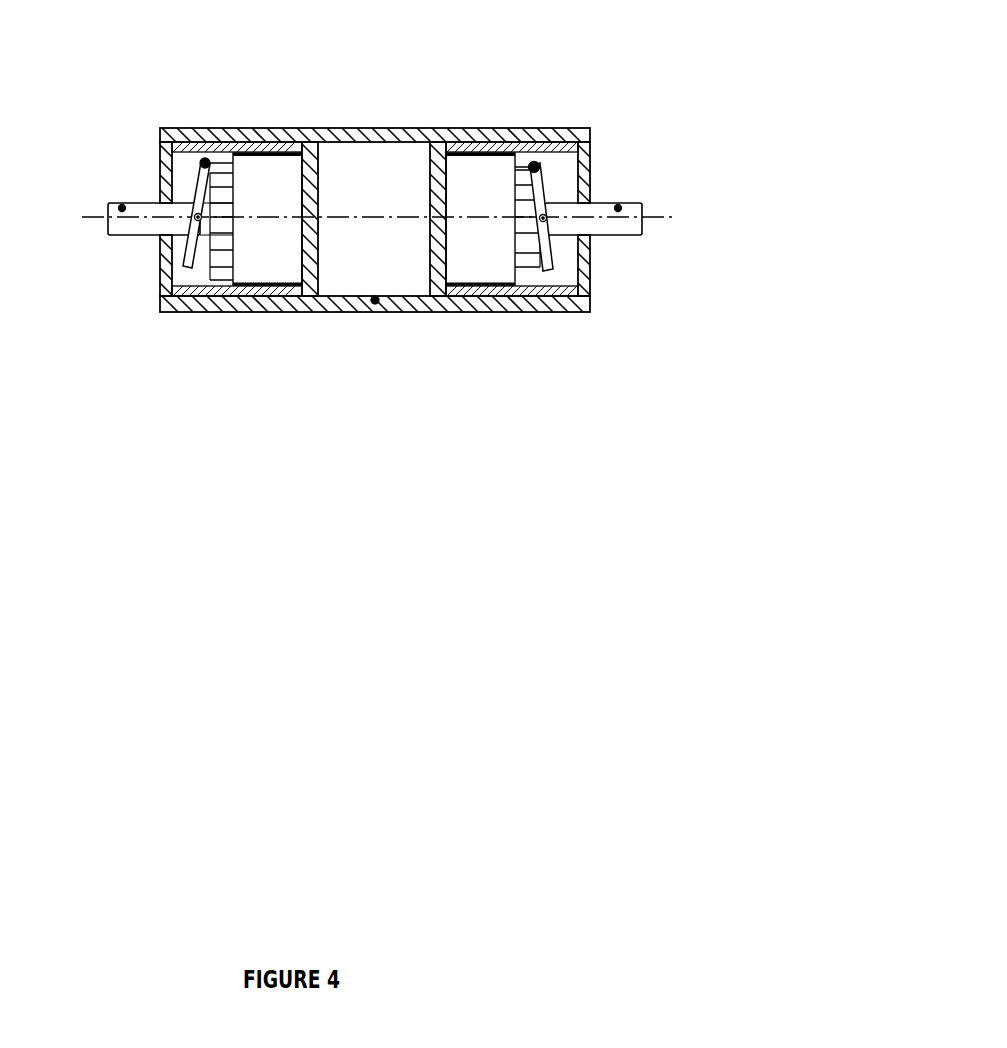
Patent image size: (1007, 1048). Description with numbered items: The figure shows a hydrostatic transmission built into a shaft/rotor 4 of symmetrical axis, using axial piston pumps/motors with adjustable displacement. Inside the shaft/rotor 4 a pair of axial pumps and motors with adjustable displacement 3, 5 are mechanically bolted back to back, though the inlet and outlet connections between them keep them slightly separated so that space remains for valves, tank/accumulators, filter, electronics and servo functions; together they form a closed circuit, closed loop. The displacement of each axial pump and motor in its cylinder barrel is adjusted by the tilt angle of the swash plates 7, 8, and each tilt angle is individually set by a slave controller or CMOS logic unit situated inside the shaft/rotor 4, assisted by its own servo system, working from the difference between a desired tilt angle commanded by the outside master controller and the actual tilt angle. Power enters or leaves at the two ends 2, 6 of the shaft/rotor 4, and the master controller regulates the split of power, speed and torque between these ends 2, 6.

The shaft end 2 is at (122, 208).
The axial piston pump/motor with adjustable displacement 3 is at (304, 153).
The shaft/rotor 4 is at (375, 300).
The axial piston pump/motor with adjustable displacement 5 is at (445, 187).
The shaft end 6 is at (618, 208).
The swash plate 7 is at (537, 166).
The swash plate 8 is at (305, 137).